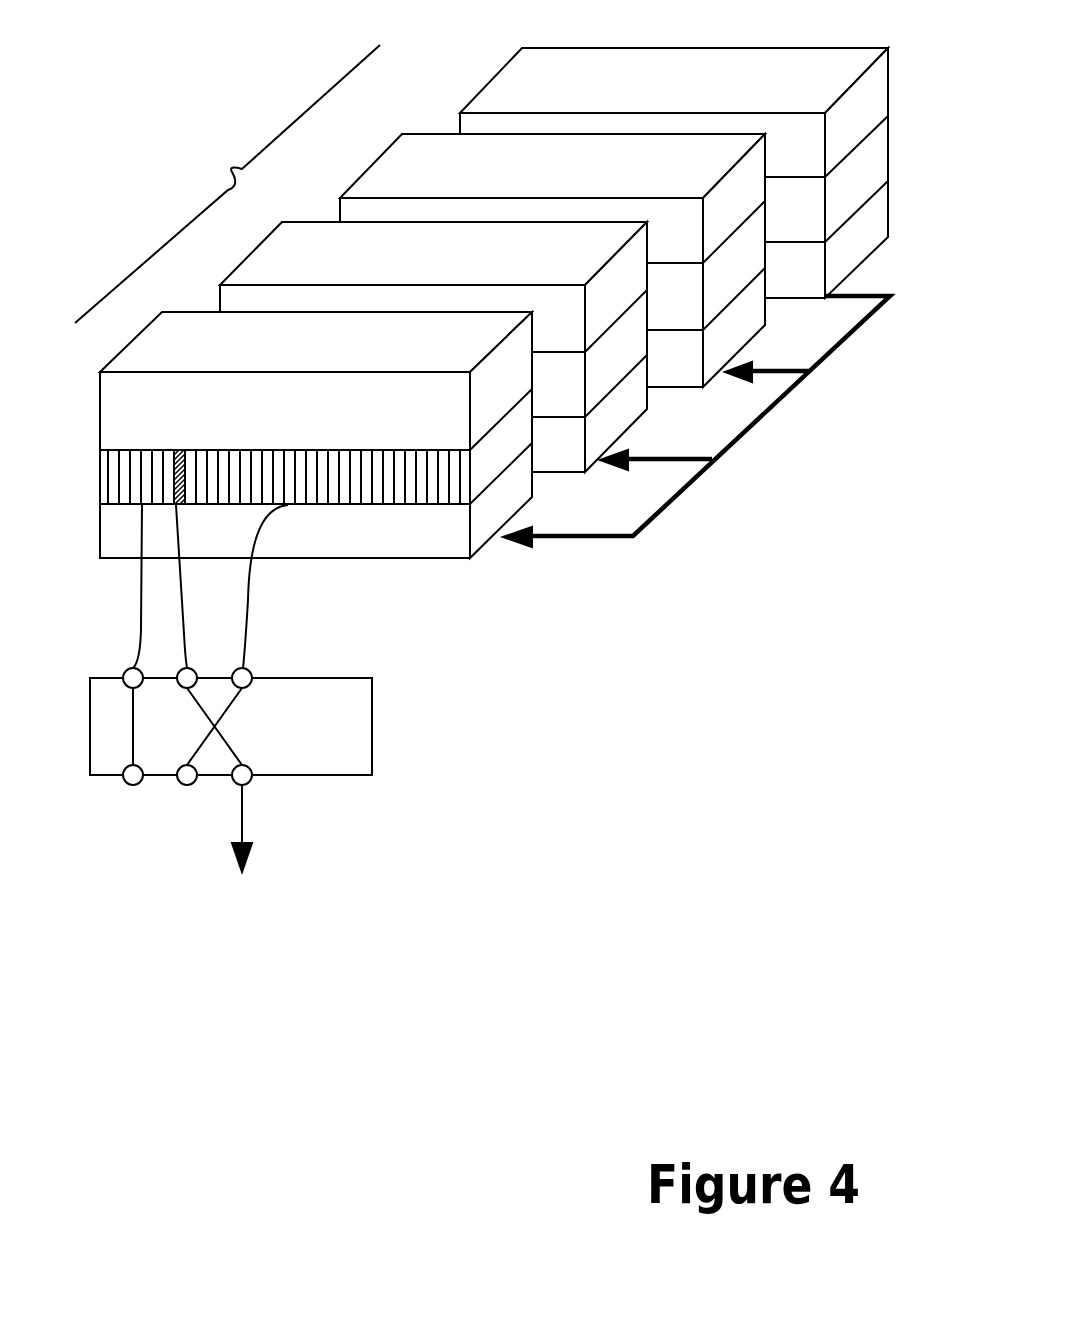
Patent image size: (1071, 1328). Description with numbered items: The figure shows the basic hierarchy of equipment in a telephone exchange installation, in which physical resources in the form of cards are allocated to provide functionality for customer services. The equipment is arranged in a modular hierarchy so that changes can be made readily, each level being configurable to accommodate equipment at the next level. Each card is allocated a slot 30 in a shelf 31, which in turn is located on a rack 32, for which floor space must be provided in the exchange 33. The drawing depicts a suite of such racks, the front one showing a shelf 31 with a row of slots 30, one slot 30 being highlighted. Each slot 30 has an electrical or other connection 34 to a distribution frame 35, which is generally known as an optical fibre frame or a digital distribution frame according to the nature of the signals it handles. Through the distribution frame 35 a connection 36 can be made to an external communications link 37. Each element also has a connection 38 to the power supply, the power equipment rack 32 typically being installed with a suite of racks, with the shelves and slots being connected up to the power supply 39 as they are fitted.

The slot 30 is at (176, 506).
The shelf 31 is at (100, 497).
The rack 32 is at (478, 548).
The exchange 33 is at (227, 184).
The connection 34 is at (187, 647).
The distribution frame 35 is at (372, 750).
The connection 36 is at (230, 742).
The external communications link 37 is at (243, 818).
The connection to power supply 38 is at (728, 444).
The power supply 39 is at (498, 72).